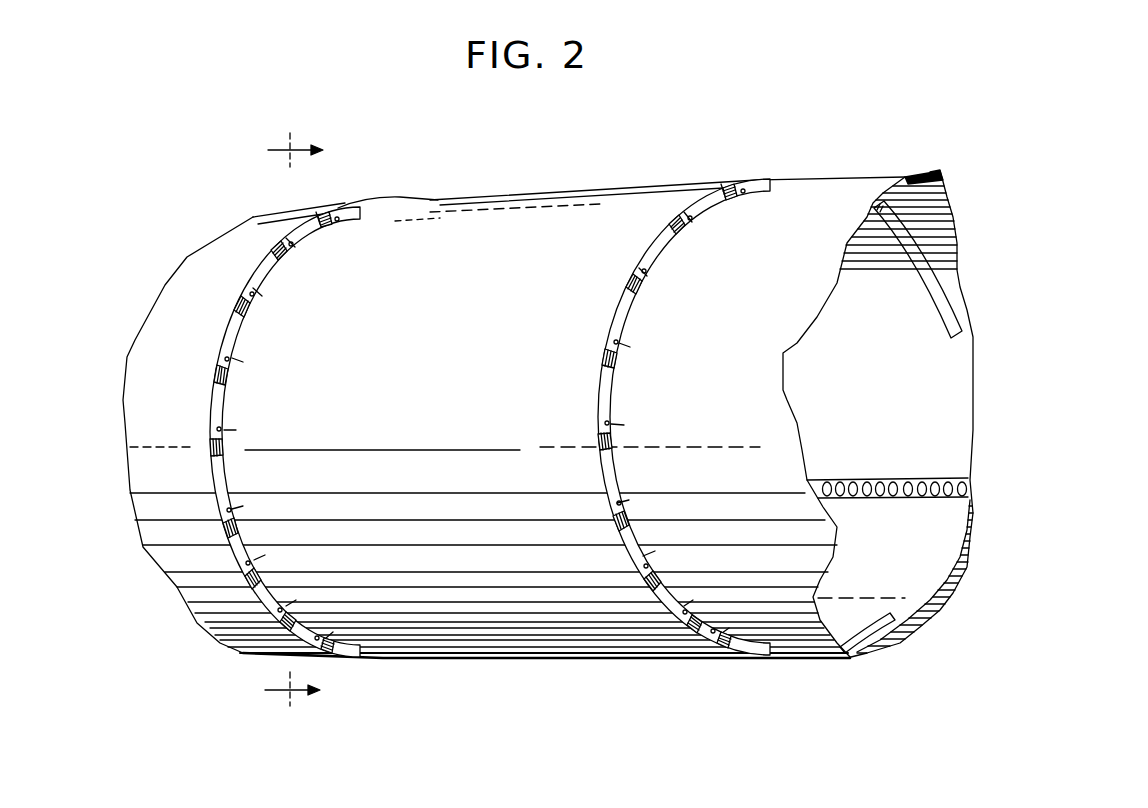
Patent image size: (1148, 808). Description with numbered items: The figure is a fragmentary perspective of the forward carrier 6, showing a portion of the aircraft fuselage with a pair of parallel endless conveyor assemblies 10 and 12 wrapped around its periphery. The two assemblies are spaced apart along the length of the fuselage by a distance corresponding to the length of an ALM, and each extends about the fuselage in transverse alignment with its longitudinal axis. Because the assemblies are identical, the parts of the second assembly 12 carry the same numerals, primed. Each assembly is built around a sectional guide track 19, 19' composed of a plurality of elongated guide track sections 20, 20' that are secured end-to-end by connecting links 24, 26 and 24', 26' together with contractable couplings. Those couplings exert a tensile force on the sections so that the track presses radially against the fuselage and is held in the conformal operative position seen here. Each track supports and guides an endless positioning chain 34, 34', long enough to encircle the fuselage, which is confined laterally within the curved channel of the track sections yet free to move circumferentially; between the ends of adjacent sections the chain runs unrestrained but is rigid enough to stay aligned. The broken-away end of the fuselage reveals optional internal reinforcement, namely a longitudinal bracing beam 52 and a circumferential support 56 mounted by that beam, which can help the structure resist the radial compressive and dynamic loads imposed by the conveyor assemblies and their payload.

The carrier 6 is at (646, 172).
The conveyor assembly 10 is at (399, 172).
The conveyor assembly 12 is at (805, 140).
The sectional guide track 19 is at (285, 432).
The sectional guide track 19' is at (648, 417).
The guide track section 20 is at (264, 439).
The guide track section 20' is at (684, 424).
The connecting link 24 is at (297, 428).
The connecting link 24' is at (677, 411).
The connecting link 26 is at (240, 419).
The connecting link 26' is at (658, 416).
The endless positioning chain 34 is at (266, 516).
The endless positioning chain 34' is at (586, 514).
The longitudinal bracing beam 52 is at (885, 480).
The circumferential support 56 is at (933, 277).